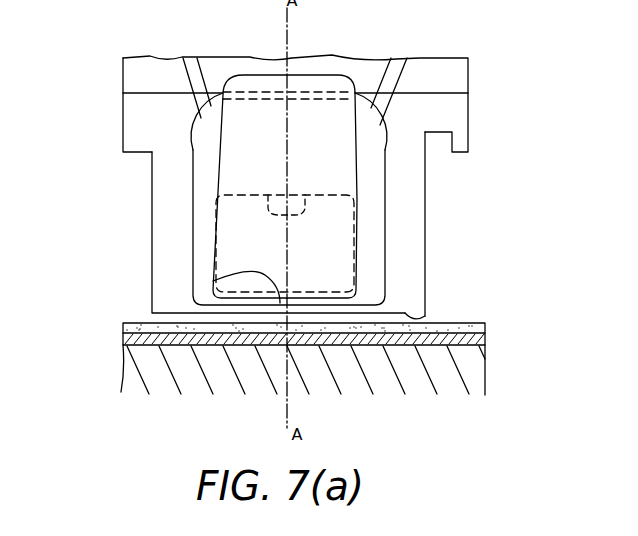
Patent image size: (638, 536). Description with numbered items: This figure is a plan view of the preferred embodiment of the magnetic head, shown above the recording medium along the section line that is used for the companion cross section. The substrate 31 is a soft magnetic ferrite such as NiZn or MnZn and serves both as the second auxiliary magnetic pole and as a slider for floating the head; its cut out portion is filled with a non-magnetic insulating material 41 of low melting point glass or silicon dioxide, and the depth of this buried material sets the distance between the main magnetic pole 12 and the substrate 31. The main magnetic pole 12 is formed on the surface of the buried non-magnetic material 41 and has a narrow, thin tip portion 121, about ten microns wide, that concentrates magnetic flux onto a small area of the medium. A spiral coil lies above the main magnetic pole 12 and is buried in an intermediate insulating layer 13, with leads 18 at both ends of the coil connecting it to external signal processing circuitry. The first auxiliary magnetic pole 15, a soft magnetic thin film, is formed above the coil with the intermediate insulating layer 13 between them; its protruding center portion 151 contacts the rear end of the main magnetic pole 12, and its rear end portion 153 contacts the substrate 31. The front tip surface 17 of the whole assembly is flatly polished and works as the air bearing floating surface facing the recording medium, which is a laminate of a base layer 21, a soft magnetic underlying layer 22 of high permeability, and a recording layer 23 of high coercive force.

The main magnetic pole 12 is at (242, 196).
The intermediate insulating layer 13 is at (373, 232).
The first auxiliary magnetic pole 15 is at (227, 148).
The front tip surface 17 is at (432, 318).
The leads 18 is at (192, 57).
The base layer 21 is at (472, 372).
The underlying layer 22 is at (483, 340).
The recording layer 23 is at (486, 325).
The substrate 31 is at (457, 75).
The non-magnetic insulating material 41 is at (413, 190).
The tip portion 121 is at (213, 281).
The protruding portion 151 is at (272, 205).
The rear end portion 153 is at (310, 88).